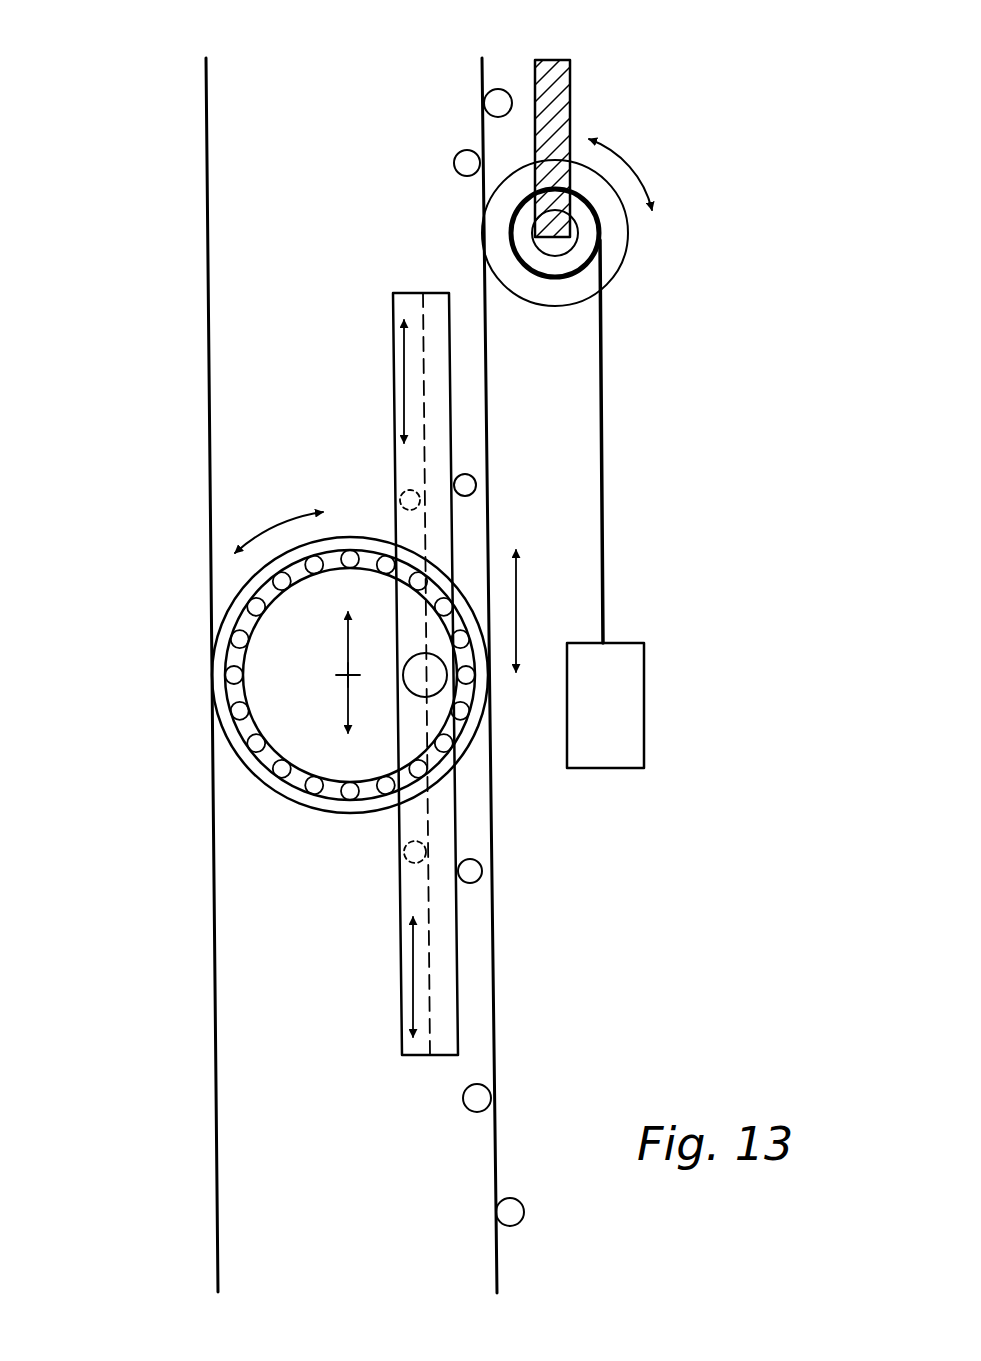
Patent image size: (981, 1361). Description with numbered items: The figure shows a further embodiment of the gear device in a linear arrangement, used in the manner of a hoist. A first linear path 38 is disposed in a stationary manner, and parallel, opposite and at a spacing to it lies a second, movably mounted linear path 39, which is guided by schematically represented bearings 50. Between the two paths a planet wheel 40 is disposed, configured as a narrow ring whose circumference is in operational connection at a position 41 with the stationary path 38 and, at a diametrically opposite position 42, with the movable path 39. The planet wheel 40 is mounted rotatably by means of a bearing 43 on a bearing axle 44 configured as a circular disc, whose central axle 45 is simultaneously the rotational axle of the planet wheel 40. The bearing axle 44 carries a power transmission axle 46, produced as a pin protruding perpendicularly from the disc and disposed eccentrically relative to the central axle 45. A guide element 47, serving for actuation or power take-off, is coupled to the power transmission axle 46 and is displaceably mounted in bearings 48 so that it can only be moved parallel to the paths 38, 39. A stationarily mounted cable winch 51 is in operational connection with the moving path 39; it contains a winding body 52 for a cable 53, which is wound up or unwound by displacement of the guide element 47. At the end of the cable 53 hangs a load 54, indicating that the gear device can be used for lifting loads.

The first linear path 38 is at (207, 233).
The second linear path 39 is at (495, 1032).
The planet wheel 40 is at (243, 750).
The position 41 is at (213, 678).
The position 42 is at (488, 668).
The bearing 43 is at (295, 777).
The bearing axle 44 is at (297, 733).
The central axle 45 is at (345, 677).
The power transmission axle 46 is at (435, 678).
The guide element 47 is at (435, 307).
The bearings 48 is at (465, 485).
The bearings 50 is at (467, 162).
The cable winch 51 is at (617, 238).
The winding body 52 is at (570, 263).
The cable 53 is at (605, 382).
The load 54 is at (613, 675).